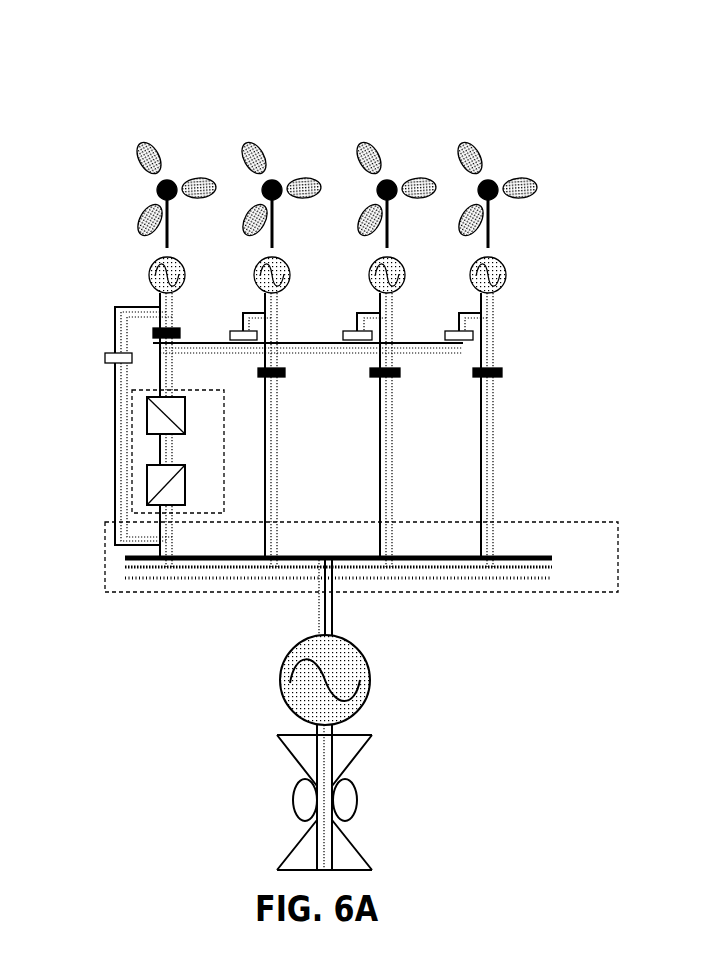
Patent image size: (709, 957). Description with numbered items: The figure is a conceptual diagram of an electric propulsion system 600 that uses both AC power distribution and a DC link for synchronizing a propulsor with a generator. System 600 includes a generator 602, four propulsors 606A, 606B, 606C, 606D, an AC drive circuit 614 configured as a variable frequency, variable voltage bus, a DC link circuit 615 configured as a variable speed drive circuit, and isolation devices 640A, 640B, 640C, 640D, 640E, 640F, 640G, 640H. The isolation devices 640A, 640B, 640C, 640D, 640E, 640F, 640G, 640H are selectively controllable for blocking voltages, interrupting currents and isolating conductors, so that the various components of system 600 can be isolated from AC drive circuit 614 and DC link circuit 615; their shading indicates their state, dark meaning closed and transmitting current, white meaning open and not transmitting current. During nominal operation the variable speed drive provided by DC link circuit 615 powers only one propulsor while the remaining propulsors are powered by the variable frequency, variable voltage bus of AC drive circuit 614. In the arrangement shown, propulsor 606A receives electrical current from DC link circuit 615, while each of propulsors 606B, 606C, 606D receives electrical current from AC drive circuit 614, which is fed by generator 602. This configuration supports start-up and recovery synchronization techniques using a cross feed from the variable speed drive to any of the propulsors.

The system 600 is at (108, 65).
The propulsor 606A is at (160, 140).
The propulsor 606B is at (275, 152).
The propulsor 606C is at (395, 148).
The propulsor 606D is at (514, 161).
The isolation device 640A is at (105, 358).
The isolation device 640B is at (153, 333).
The isolation device 640C is at (237, 331).
The isolation device 640D is at (258, 372).
The isolation device 640E is at (350, 331).
The isolation device 640F is at (370, 371).
The isolation device 640G is at (473, 335).
The isolation device 640H is at (502, 372).
The DC link circuit 615 is at (178, 451).
The AC drive circuit 614 is at (361, 557).
The generator 602 is at (280, 668).